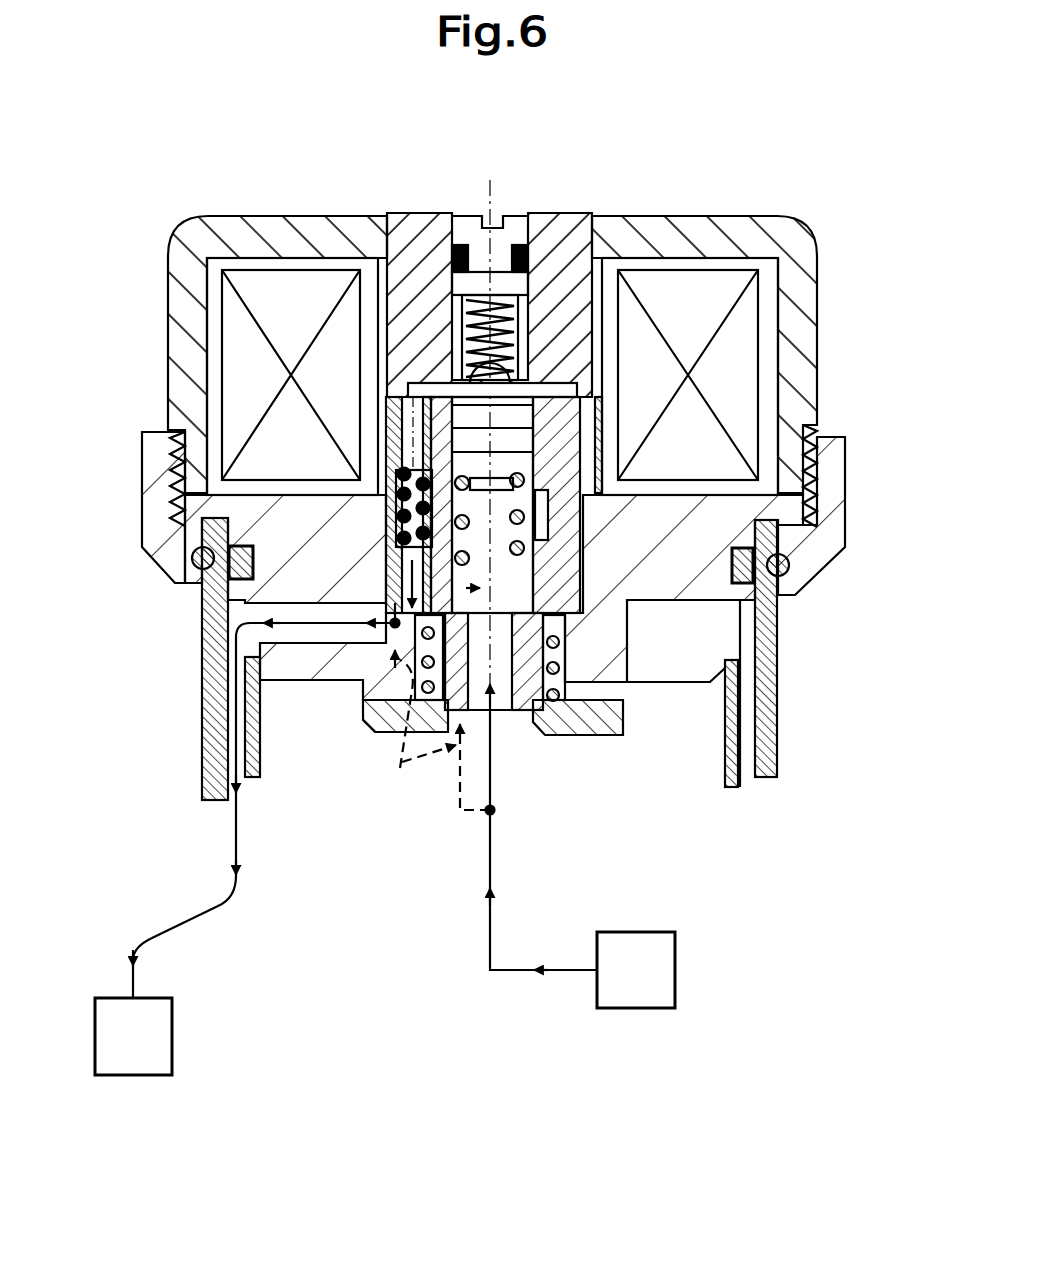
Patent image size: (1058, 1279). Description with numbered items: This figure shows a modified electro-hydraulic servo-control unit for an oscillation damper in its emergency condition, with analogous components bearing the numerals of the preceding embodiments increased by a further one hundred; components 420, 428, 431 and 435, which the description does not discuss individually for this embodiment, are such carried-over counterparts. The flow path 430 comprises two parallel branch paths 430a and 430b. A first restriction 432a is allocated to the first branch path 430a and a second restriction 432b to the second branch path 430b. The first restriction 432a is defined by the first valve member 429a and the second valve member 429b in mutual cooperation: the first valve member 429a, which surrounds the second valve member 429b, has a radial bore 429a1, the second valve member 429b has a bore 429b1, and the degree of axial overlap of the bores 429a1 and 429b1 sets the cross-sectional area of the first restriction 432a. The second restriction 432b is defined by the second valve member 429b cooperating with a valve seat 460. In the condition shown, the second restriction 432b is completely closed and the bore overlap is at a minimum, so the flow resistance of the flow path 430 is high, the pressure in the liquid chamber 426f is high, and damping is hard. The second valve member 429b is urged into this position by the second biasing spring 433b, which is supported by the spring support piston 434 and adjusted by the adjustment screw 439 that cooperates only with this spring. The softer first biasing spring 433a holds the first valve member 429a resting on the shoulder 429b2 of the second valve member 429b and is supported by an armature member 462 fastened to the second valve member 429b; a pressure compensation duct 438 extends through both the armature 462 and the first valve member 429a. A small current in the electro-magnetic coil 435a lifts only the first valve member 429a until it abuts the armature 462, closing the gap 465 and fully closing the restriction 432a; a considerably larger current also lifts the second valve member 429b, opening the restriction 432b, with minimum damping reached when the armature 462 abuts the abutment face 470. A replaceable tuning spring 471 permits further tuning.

The reservoir / tank 420 is at (172, 1048).
The liquid chamber 426f is at (637, 1008).
The solenoid valve 428 is at (834, 352).
The first valve member 429a is at (400, 562).
The radial bore 429a1 is at (392, 512).
The second valve member 429b is at (590, 600).
The bore 429b1 is at (582, 560).
The shoulder 429b2 is at (587, 623).
The flow path 430 is at (192, 912).
The first branch path 430a is at (492, 756).
The second branch path 430b is at (436, 737).
The housing 431 is at (648, 232).
The first restriction 432a is at (390, 643).
The second restriction 432b is at (522, 722).
The first biasing spring 433a is at (398, 507).
The second biasing spring 433b is at (605, 505).
The spring support piston 434 is at (467, 412).
The solenoid 435 is at (745, 216).
The electro-magnetic coil 435a is at (748, 332).
The pressure compensation duct 438 is at (400, 412).
The adjustment screw 439 is at (513, 245).
The valve seat 460 is at (597, 736).
The armature member 462 is at (405, 416).
The gap 465 is at (603, 435).
The abutment face 470 is at (447, 397).
The tuning spring 471 is at (628, 690).